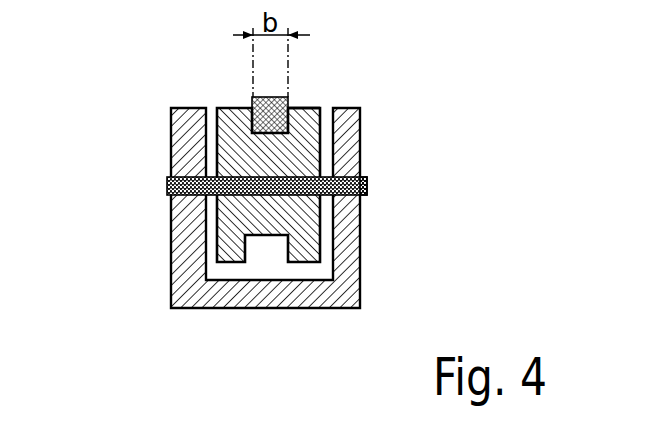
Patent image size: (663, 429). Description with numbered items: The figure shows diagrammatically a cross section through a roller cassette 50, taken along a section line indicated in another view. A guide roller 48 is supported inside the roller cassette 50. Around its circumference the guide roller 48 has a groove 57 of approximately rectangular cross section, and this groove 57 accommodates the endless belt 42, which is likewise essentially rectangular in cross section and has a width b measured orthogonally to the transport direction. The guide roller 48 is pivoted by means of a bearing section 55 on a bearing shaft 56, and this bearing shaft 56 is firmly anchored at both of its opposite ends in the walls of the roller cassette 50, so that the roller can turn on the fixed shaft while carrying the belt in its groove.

The roller cassette 50 is at (170, 242).
The guide roller 48 is at (235, 108).
The groove 57 is at (310, 105).
The endless belt 42 is at (287, 103).
The bearing section 55 is at (302, 172).
The bearing shaft 56 is at (367, 183).